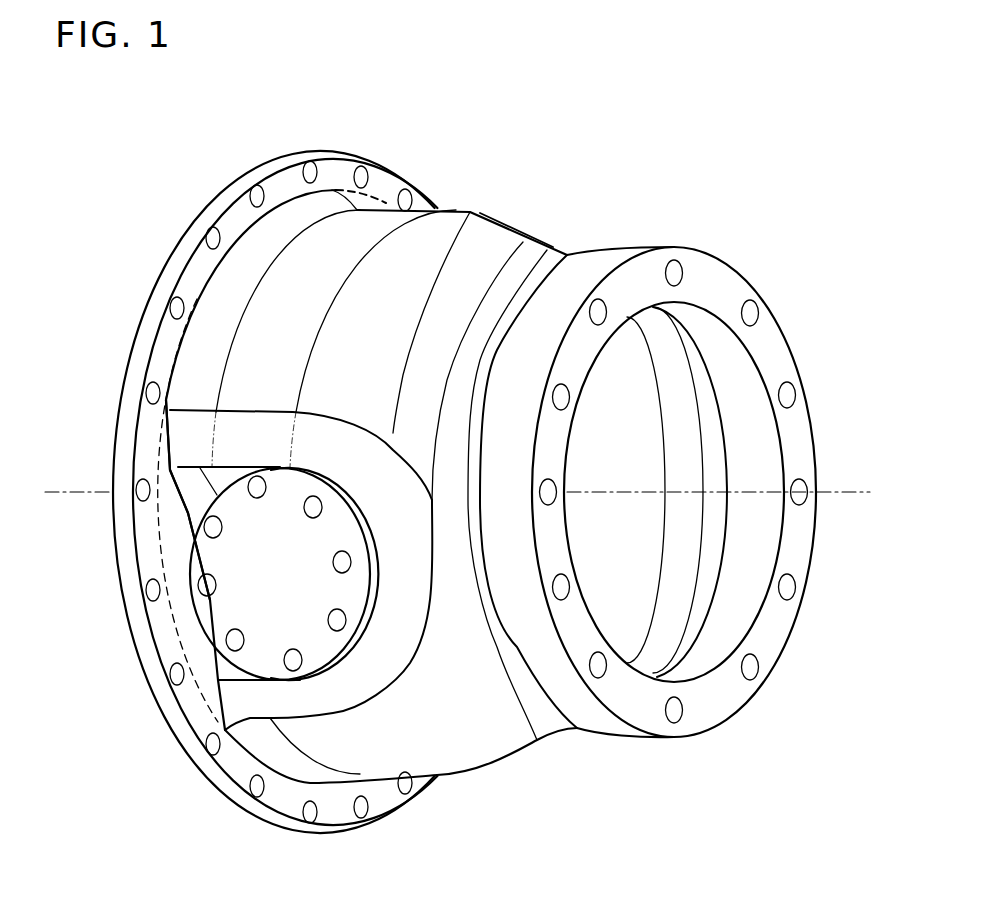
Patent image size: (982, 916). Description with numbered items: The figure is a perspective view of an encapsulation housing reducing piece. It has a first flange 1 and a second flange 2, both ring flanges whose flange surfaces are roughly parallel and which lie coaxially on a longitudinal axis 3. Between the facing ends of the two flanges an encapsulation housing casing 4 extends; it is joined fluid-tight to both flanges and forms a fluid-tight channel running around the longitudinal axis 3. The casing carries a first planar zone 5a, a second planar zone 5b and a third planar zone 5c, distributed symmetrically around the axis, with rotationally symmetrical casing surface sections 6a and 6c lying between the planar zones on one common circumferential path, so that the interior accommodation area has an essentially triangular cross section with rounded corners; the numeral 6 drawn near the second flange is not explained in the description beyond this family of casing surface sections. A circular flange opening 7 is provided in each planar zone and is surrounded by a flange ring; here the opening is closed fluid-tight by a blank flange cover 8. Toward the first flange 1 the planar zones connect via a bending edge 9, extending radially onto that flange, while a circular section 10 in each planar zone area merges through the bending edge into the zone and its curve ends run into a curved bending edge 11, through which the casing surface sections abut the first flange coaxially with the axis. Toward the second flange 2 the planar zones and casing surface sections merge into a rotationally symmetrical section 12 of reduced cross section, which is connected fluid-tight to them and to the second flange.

The first flange 1 is at (237, 182).
The second flange 2 is at (597, 717).
The longitudinal axis 3 is at (77, 486).
The encapsulation housing casing 4 is at (595, 190).
The first planar zone 5a is at (217, 483).
The second planar zone 5b is at (576, 248).
The third planar zone 5c is at (443, 796).
The second flange 6 is at (783, 685).
The casing surface section 6a is at (290, 280).
The casing surface section 6c is at (333, 740).
The flange opening 7 is at (303, 468).
The blank flange cover 8 is at (220, 613).
The bending edge 9 is at (183, 510).
The circular section 10 is at (175, 553).
The curved bending edge 11 is at (217, 263).
The rotationally symmetrical section 12 is at (537, 742).